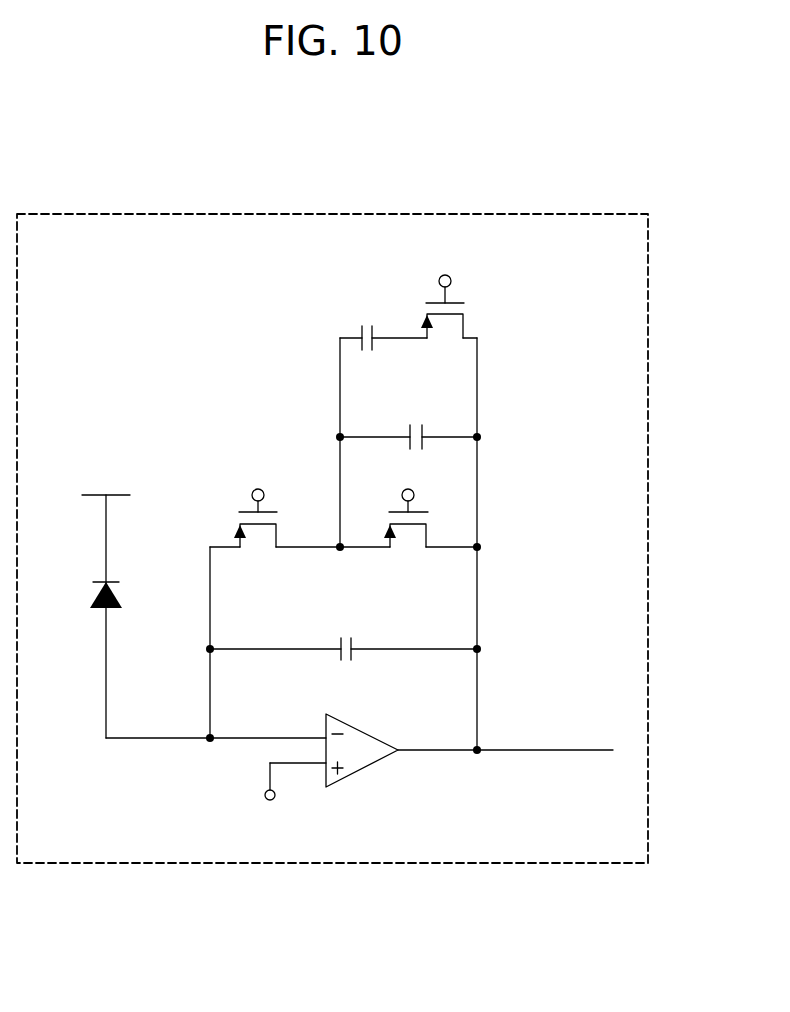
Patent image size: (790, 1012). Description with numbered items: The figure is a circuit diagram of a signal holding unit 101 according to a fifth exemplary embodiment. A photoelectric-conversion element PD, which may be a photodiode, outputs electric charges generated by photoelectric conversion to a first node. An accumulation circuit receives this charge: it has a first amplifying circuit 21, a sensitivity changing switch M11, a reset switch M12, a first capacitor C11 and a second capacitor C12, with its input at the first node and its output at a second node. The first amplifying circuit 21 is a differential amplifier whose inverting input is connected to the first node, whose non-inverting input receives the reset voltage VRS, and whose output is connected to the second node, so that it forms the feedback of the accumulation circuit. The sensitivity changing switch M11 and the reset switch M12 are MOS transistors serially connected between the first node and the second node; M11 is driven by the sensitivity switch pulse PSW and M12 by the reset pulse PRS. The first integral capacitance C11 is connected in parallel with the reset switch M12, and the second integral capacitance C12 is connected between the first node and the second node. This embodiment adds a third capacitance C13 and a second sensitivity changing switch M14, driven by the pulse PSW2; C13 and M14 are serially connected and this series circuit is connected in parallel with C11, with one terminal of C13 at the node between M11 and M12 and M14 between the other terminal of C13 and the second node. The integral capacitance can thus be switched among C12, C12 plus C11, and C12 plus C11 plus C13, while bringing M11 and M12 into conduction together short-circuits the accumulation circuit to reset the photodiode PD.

The signal holding unit 101 is at (648, 420).
The first amplifying circuit 21 is at (355, 773).
The first capacitor C11 is at (417, 420).
The second capacitor C12 is at (348, 633).
The third capacitance C13 is at (368, 322).
The sensitivity changing switch M11 is at (240, 520).
The reset switch M12 is at (430, 518).
The second sensitivity changing switch M14 is at (467, 308).
The photoelectric-conversion element PD is at (121, 616).
The sensitivity switch pulse PSW is at (256, 474).
The switch control signal PSW2 is at (440, 261).
The reset pulse PRS is at (405, 473).
The reset voltage VRS is at (266, 814).